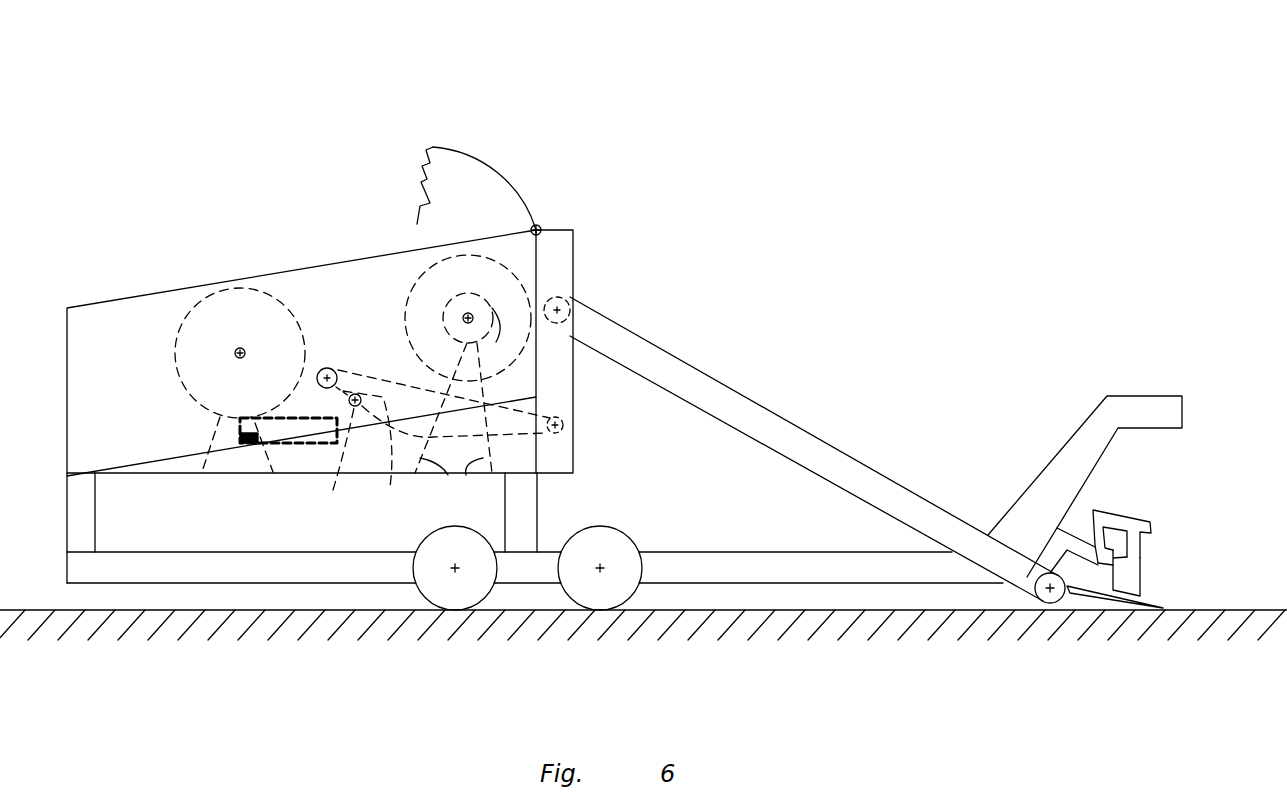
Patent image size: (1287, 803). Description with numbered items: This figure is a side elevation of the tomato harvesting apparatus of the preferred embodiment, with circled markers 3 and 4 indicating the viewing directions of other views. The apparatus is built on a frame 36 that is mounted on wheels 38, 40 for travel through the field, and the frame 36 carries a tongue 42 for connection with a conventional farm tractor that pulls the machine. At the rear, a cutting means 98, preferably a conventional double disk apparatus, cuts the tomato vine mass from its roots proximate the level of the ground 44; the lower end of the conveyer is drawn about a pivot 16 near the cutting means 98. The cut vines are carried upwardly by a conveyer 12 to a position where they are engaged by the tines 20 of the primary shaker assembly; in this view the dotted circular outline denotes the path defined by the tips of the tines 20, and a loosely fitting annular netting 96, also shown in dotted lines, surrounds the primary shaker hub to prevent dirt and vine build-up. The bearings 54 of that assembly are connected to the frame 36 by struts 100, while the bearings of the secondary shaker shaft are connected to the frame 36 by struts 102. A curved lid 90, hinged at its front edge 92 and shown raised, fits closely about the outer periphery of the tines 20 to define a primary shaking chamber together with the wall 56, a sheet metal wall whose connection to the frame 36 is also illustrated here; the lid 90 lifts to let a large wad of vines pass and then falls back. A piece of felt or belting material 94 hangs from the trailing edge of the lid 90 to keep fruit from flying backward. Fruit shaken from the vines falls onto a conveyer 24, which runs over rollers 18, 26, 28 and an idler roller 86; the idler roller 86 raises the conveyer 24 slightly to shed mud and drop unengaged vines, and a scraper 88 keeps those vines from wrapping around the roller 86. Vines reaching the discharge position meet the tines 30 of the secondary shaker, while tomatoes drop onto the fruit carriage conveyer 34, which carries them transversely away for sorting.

The view direction of FIG. 3 is at (470, 126).
The view direction of FIG. 4 is at (243, 168).
The conveyer 12 is at (745, 392).
The pivot 16 is at (1052, 594).
The roller 18 is at (573, 293).
The tines 20 is at (420, 278).
The conveyer 24 is at (370, 455).
The roller 26 is at (565, 422).
The roller 28 is at (329, 367).
The tines 30 is at (207, 300).
The fruit carriage conveyer 34 is at (260, 437).
The frame 36 is at (797, 568).
The wheel 38 is at (455, 594).
The wheel 40 is at (600, 590).
The tongue 42 is at (1083, 428).
The ground 44 is at (1241, 608).
The bearings 54 is at (480, 312).
The wall 56 is at (99, 414).
The idler roller 86 is at (332, 464).
The scraper 88 is at (348, 402).
The lid 90 is at (507, 182).
The front edge 92 is at (541, 226).
The flexible material 94 is at (428, 183).
The annular netting 96 is at (497, 338).
The cutting means 98 is at (1148, 602).
The struts 100 is at (453, 430).
The struts 102 is at (197, 455).